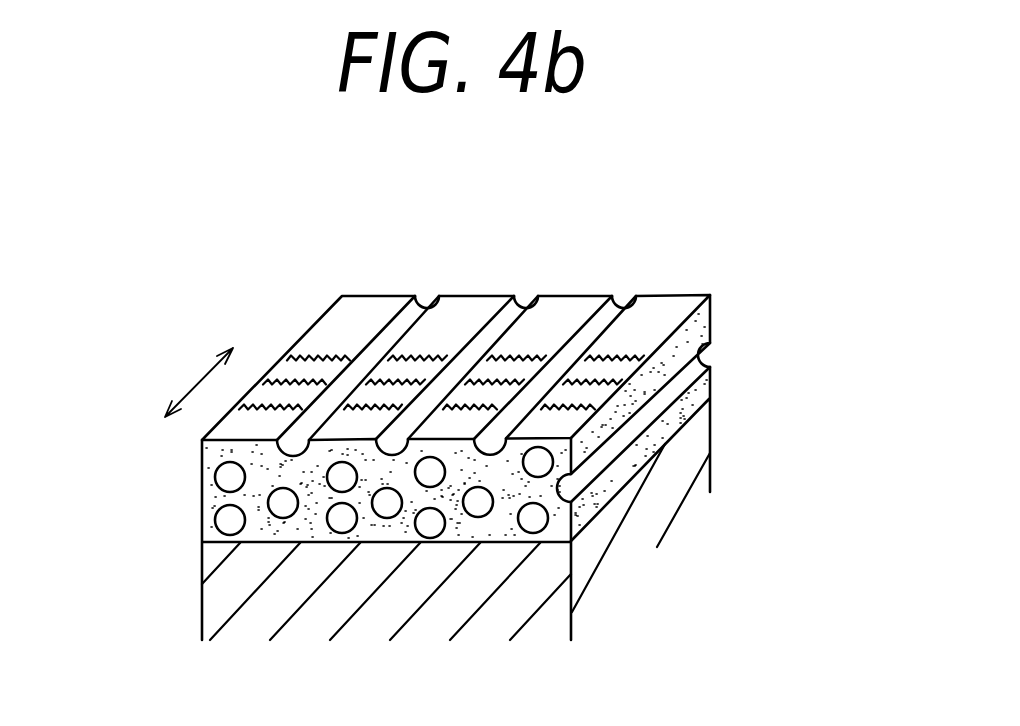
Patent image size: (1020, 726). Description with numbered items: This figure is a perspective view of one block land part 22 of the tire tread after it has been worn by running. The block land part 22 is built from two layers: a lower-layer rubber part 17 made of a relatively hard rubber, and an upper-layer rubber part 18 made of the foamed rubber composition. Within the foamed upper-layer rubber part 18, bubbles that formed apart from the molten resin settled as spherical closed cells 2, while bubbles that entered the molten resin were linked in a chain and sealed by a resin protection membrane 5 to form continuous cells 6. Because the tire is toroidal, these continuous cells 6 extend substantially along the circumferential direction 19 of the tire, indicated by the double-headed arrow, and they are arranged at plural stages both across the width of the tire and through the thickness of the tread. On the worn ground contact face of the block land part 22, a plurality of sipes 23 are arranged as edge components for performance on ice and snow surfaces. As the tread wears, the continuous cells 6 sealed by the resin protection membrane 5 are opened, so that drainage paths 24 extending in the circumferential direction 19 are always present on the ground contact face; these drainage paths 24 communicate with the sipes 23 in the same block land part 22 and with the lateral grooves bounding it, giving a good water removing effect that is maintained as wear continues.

The spherical closed cell 2 is at (457, 467).
The resin protection membrane 5 is at (217, 498).
The continuous cell 6 is at (233, 482).
The lower-layer rubber part 17 is at (743, 477).
The upper-layer rubber part 18 is at (743, 389).
The circumferential direction 19 is at (203, 380).
The block land part 22 is at (506, 322).
The sipe 23 is at (313, 355).
The drainage path 24 is at (588, 342).